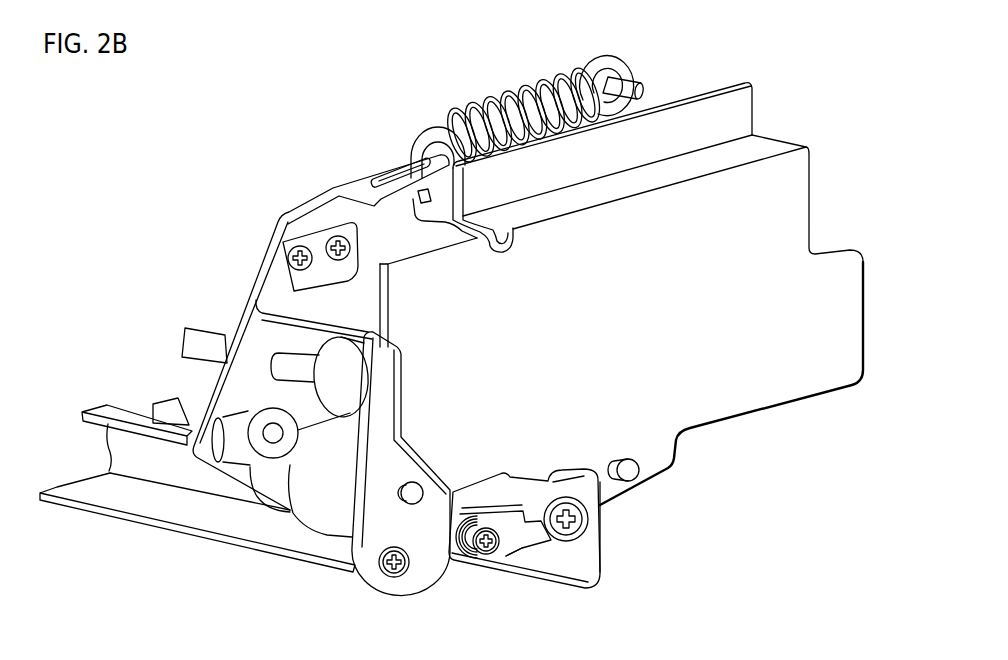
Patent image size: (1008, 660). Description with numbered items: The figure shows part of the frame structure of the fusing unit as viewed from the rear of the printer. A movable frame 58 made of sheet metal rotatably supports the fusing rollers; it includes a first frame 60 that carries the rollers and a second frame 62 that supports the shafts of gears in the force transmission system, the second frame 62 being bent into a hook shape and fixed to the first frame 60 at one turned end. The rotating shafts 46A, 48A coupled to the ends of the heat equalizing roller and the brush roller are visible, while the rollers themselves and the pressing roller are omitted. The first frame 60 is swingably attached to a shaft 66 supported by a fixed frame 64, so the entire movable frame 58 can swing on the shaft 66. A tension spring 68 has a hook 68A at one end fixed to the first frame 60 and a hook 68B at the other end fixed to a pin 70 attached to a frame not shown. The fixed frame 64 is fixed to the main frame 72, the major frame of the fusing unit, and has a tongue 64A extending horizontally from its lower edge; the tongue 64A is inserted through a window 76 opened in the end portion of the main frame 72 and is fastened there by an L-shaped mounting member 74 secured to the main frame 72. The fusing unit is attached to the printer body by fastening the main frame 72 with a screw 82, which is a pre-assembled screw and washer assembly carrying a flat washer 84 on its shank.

The rotating shaft 46A is at (287, 360).
The rotating shaft 48A is at (173, 408).
The movable frame 58 is at (276, 151).
The first frame 60 is at (297, 209).
The second frame 62 is at (295, 308).
The fixed frame 64 is at (806, 178).
The tongue 64A is at (505, 548).
The shaft 66 is at (641, 476).
The tension spring 68 is at (517, 84).
The hook 68A is at (426, 137).
The hook 68B is at (604, 51).
The pin 70 is at (647, 89).
The main frame 72 is at (582, 588).
The mounting member 74 is at (450, 560).
The window 76 is at (539, 530).
The screw 82 is at (590, 542).
The washer 84 is at (587, 527).